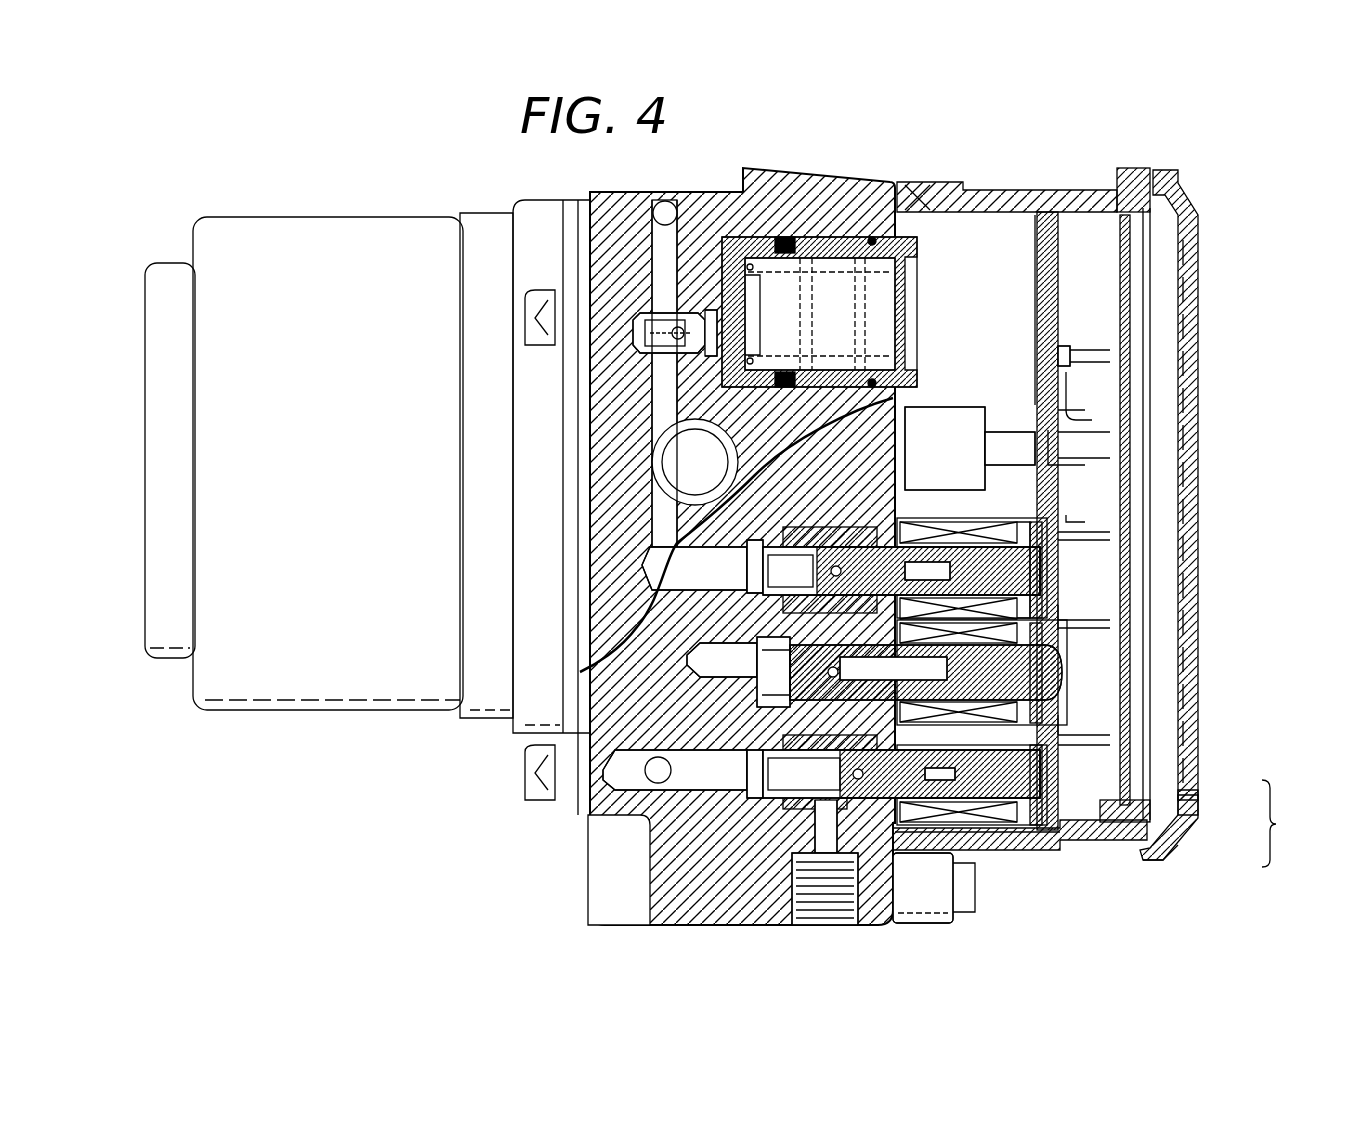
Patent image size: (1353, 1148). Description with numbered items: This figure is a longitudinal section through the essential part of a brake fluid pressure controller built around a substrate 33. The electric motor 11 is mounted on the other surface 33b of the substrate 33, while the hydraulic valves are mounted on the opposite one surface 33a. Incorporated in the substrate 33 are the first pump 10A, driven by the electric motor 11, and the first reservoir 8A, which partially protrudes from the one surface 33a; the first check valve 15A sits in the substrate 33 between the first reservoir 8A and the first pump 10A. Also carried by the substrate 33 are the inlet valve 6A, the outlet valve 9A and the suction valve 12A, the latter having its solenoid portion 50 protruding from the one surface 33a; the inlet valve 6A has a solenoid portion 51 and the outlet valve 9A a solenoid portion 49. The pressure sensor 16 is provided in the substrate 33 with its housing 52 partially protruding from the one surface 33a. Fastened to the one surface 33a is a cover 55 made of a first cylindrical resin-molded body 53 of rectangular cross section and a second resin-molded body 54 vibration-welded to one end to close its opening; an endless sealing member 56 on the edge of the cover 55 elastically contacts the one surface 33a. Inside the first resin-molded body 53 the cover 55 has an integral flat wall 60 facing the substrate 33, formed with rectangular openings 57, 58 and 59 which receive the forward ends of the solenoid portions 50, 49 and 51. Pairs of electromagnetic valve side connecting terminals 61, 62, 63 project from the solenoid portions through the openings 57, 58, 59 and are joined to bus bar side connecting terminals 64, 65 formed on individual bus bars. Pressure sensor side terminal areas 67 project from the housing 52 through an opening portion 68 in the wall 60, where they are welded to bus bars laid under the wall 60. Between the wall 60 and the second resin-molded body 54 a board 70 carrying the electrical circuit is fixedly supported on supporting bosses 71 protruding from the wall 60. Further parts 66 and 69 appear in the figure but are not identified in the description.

The electric motor 11 is at (273, 452).
The substrate 33 is at (658, 887).
The one surface 33a is at (898, 395).
The other surface 33b is at (590, 453).
The first reservoir 8A is at (717, 278).
The first check valve 15A is at (640, 357).
The inlet valve 6A is at (603, 735).
The first pump 10A is at (640, 492).
The suction valve 12A is at (770, 603).
The outlet valve 9A is at (797, 813).
The pressure sensor 16 is at (990, 400).
The solenoid portion 49 is at (1037, 843).
The solenoid portion 50 is at (1072, 670).
The solenoid portion 51 is at (1045, 570).
The housing 52 is at (950, 420).
The first cylindrical resin-molded body 53 is at (1130, 862).
The second resin-molded body 54 is at (1185, 790).
The cover 55 is at (1282, 823).
The endless sealing member 56 is at (950, 867).
The rectangular opening 57 is at (1053, 642).
The rectangular opening 58 is at (1060, 800).
The rectangular opening 59 is at (1053, 547).
The flat wall 60 is at (1063, 265).
The electromagnetic valve side connecting terminal 61 is at (1143, 620).
The electromagnetic valve side connecting terminal 62 is at (1092, 358).
The electromagnetic valve side connecting terminal 63 is at (1100, 532).
The bus bar side connecting terminal 64 is at (1085, 632).
The bus bar side connecting terminal 65 is at (1068, 720).
The terminal bracket 66 is at (1067, 520).
The pressure sensor side terminal areas 67 is at (1100, 458).
The opening portion 68 is at (1033, 400).
The terminal bracket 69 is at (1070, 420).
The board 70 is at (1125, 320).
The supporting bosses 71 is at (1107, 227).